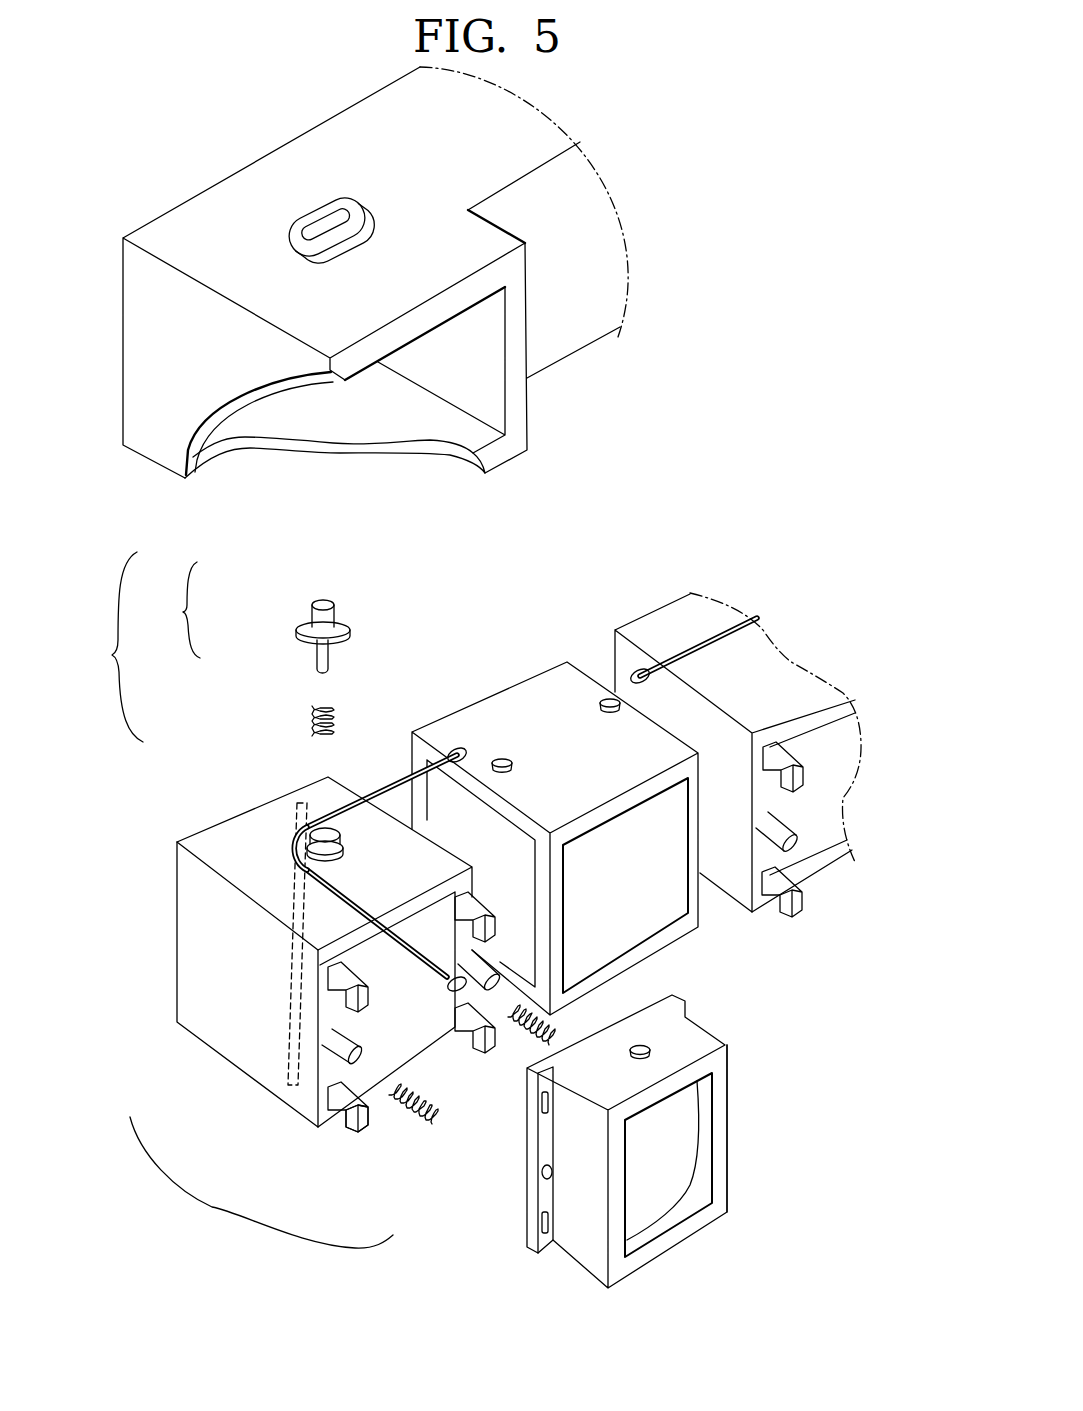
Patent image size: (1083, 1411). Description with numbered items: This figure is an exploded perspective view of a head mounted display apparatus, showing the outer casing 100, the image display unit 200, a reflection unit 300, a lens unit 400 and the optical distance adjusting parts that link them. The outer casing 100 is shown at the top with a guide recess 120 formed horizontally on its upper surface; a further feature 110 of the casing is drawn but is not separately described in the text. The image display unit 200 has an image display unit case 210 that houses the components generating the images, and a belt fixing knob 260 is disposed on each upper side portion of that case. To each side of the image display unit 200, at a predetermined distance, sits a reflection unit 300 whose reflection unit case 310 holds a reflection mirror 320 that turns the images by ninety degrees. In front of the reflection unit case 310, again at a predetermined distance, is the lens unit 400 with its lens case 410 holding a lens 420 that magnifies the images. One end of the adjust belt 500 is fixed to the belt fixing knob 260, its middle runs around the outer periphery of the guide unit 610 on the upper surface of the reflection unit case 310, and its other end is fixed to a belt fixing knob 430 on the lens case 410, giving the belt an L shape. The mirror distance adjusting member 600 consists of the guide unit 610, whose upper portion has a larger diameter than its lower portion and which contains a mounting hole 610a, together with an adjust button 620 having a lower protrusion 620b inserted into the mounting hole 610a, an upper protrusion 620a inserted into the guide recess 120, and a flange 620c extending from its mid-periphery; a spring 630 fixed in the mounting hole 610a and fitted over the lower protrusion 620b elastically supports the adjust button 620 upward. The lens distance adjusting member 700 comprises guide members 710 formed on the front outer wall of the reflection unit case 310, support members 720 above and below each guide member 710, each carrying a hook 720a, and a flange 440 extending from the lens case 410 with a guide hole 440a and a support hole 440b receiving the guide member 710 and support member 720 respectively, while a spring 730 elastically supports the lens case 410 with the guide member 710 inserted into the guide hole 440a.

The outer casing 100 is at (315, 137).
The opening 110 is at (340, 235).
The guide recess 120 is at (330, 223).
The image display unit 200 is at (542, 651).
The image display unit case 210 is at (677, 938).
The belt fixing knob 260 is at (502, 759).
The reflection unit 300 is at (150, 845).
The reflection unit case 310 is at (187, 935).
The reflection mirror 320 is at (292, 997).
The lens unit 400 is at (721, 1246).
The lens case 410 is at (727, 1128).
The lens 420 is at (645, 1213).
The belt fixing knob 430 is at (650, 1048).
The flange 440 is at (530, 1153).
The guide hole 440a is at (543, 1178).
The support hole 440b is at (543, 1103).
The adjust belt 500 is at (315, 888).
The mirror distance adjusting member 600 is at (203, 711).
The guide unit 610 is at (297, 843).
The mounting hole 610a is at (313, 827).
The adjust button 620 is at (241, 617).
The upper protrusion 620a is at (317, 603).
The lower protrusion 620b is at (317, 658).
The flange 620c is at (303, 630).
The spring 630 is at (310, 720).
The lens distance adjusting member 700 is at (261, 1182).
The guide member 710 is at (345, 1053).
The support member 720 is at (338, 985).
The hook 720a is at (355, 1132).
The spring 730 is at (417, 1120).